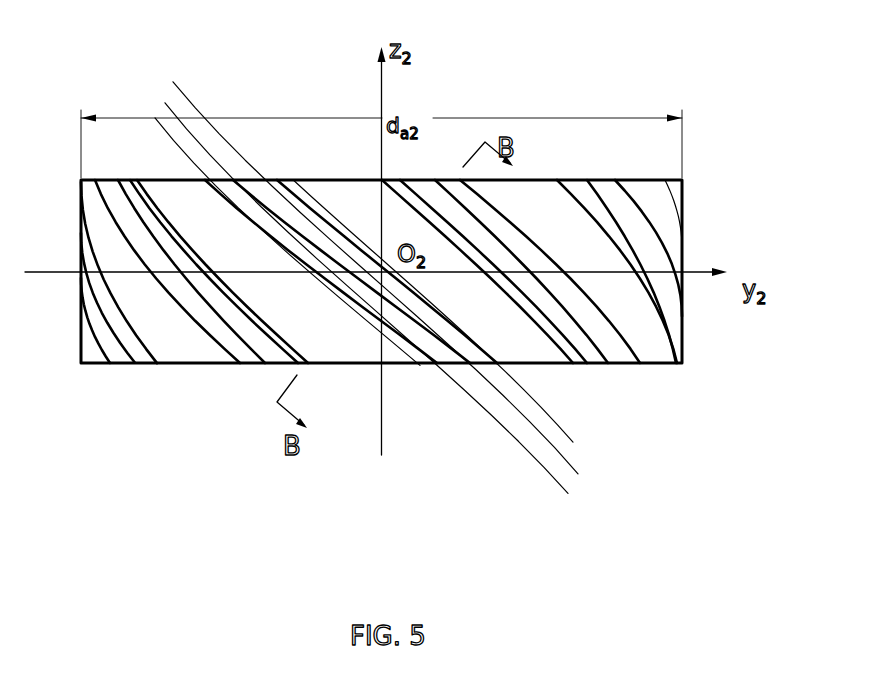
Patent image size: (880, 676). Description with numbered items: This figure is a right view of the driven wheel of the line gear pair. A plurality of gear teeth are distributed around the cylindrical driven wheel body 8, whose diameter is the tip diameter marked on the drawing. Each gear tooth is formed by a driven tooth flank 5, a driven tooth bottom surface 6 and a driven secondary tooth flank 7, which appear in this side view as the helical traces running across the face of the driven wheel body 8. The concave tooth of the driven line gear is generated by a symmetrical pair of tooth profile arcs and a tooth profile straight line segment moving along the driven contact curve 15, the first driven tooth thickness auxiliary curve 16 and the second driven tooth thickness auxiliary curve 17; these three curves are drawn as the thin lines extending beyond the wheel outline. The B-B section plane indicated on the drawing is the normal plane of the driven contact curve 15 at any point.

The tooth flank of driven line gear 5 is at (262, 327).
The tooth bottom surface of driven line gear 6 is at (214, 295).
The secondary tooth flank of driven line gear 7 is at (203, 318).
The driven wheel body 8 is at (133, 295).
The driven contact curve 15 is at (573, 437).
The first driven tooth thickness auxiliary curve 16 is at (391, 305).
The second driven tooth thickness auxiliary curve 17 is at (513, 437).